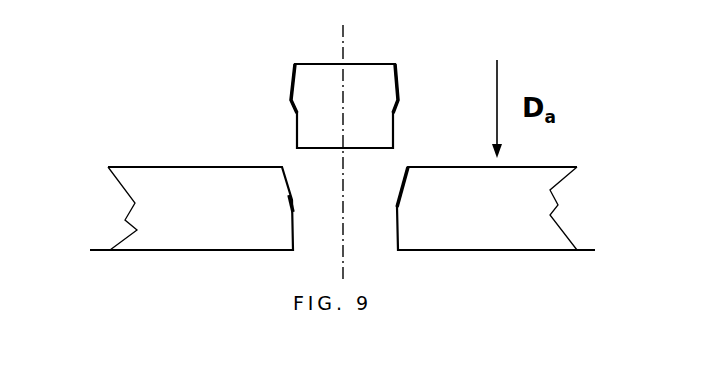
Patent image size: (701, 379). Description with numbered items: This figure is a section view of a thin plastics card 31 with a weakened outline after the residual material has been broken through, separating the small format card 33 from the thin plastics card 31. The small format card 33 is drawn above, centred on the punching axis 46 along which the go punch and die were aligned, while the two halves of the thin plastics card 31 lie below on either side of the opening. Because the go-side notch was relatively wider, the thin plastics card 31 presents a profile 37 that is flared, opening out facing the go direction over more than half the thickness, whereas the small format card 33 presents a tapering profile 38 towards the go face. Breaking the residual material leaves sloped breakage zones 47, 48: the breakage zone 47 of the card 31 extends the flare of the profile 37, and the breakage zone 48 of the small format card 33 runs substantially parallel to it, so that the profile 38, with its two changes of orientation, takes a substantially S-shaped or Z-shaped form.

The thin plastics card 31 is at (512, 186).
The small format card 33 is at (296, 92).
The profile of the thin plastics card 37 is at (360, 184).
The profile of the small format card 38 is at (444, 70).
The punching axis 46 is at (293, 146).
The breakage zone of the thin plastics card 47 is at (191, 208).
The breakage zone of the small format card 48 is at (245, 102).